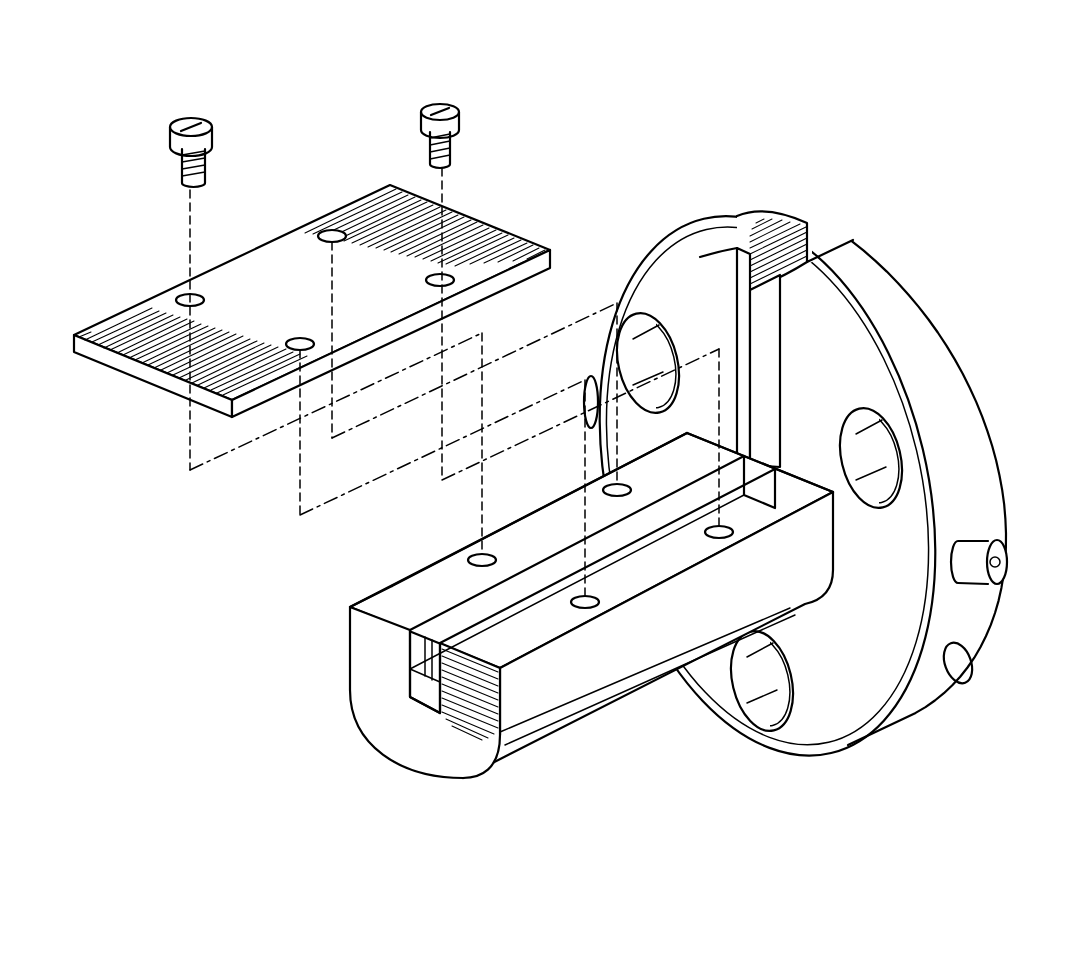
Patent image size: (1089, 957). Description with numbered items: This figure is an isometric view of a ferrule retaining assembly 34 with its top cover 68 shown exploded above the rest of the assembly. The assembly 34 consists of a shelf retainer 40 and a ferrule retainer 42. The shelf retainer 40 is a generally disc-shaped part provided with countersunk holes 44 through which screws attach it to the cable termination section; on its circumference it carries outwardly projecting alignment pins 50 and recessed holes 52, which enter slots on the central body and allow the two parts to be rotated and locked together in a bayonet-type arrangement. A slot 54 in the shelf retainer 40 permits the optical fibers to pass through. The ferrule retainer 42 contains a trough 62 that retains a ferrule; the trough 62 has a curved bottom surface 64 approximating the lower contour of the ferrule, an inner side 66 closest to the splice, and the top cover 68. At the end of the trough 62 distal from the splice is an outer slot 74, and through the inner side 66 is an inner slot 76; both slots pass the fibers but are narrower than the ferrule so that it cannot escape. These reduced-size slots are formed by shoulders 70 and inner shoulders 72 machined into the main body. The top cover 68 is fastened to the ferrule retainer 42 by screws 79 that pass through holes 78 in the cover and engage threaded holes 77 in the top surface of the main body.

The ferrule retaining assembly 34 is at (1017, 182).
The shelf retainer 40 is at (893, 288).
The ferrule retainer 42 is at (580, 690).
The countersunk holes 44 is at (634, 322).
The alignment pins 50 is at (1005, 560).
The recessed holes 52 is at (953, 672).
The slot 54 is at (825, 235).
The trough 62 is at (467, 612).
The curved bottom surface 64 is at (437, 693).
The inner side 66 is at (418, 749).
The top cover 68 is at (490, 245).
The shoulders 70 is at (720, 484).
The inner shoulders 72 is at (398, 593).
The outer slot 74 is at (763, 462).
The inner slot 76 is at (408, 700).
The threaded holes 77 is at (480, 556).
The holes 78 is at (195, 295).
The screws 79 is at (190, 117).